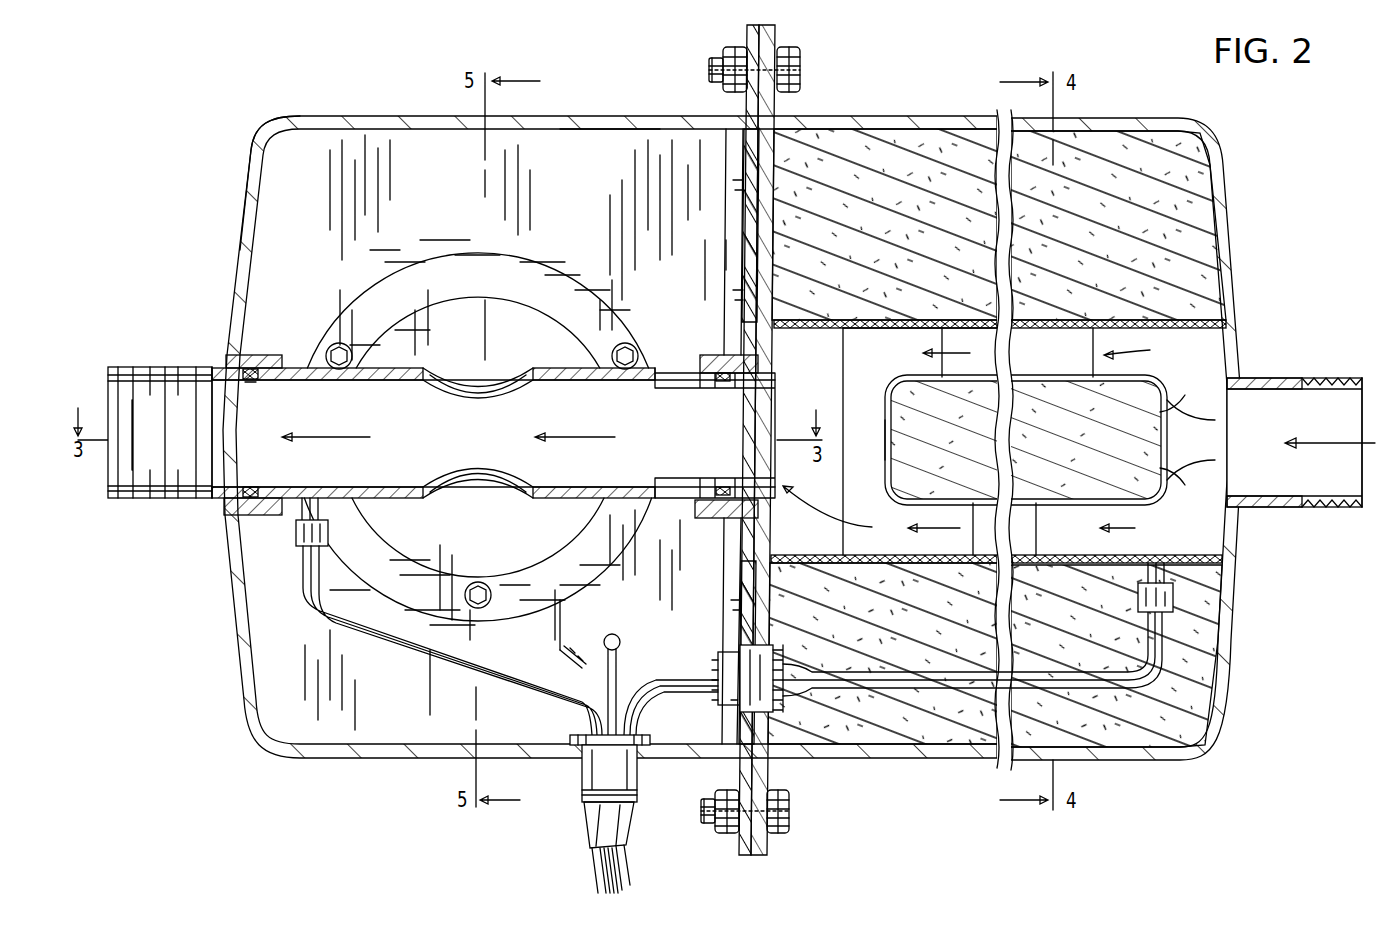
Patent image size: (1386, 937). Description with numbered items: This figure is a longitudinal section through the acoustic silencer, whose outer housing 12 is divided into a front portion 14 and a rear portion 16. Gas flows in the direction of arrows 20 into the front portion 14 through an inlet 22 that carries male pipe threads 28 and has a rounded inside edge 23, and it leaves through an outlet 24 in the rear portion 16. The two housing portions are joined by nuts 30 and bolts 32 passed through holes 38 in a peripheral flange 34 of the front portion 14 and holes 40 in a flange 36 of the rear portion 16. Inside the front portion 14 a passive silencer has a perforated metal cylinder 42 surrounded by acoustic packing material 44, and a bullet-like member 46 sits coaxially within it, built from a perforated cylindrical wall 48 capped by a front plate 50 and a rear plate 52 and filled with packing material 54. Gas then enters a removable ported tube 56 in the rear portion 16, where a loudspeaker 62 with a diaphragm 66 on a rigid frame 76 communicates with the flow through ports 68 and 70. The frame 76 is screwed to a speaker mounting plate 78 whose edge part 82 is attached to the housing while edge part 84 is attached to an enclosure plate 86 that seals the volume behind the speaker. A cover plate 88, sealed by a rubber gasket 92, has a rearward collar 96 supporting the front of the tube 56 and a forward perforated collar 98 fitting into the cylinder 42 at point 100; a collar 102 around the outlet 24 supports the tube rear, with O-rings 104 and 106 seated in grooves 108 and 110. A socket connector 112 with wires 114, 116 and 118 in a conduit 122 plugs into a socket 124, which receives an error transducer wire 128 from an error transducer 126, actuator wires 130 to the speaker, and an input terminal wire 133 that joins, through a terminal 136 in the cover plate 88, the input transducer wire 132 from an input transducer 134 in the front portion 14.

The outer housing 12 is at (562, 115).
The front portion 14 is at (1110, 120).
The rear portion 16 is at (333, 114).
The arrows 20 is at (1312, 441).
The inlet 22 is at (1256, 378).
The inside edge 23 is at (1225, 388).
The outlet 24 is at (133, 367).
The male pipe threads 28 is at (1327, 380).
The nuts 30 is at (722, 53).
The bolts 32 is at (800, 72).
The peripheral flange 34 is at (778, 42).
The flange 36 is at (745, 42).
The holes 38 is at (790, 102).
The holes 40 is at (745, 84).
The perforated metal cylinder 42 is at (885, 321).
The acoustic packing material 44 is at (1118, 439).
The bullet-like member 46 is at (1167, 470).
The cylindrical wall 48 is at (1055, 505).
The front plate 50 is at (1160, 412).
The rear plate 52 is at (884, 446).
The acoustic packing material 54 is at (1026, 440).
The ported tube 56 is at (572, 490).
The loudspeaker 62 is at (448, 252).
The diaphragm 66 is at (479, 525).
The port 68 is at (479, 478).
The port 70 is at (455, 394).
The rigid frame 76 is at (600, 549).
The speaker mounting plate 78 is at (572, 220).
The peripheral edge part 82 is at (610, 128).
The peripheral edge part 84 is at (726, 288).
The enclosure plate 86 is at (726, 258).
The cover plate 88 is at (780, 284).
The rubber gasket 92 is at (762, 187).
The cylindrical collar 96 is at (720, 368).
The collar 98 is at (867, 368).
The point 100 is at (848, 326).
The collar 102 is at (262, 368).
The O-ring 104 is at (256, 353).
The O-ring 106 is at (700, 360).
The groove 108 is at (256, 382).
The groove 110 is at (720, 426).
The socket connector 112 is at (583, 800).
The input signal wire 114 is at (628, 852).
The correction signal wires 116 is at (604, 886).
The error signal wire 118 is at (590, 853).
The conduit 122 is at (624, 821).
The socket 124 is at (598, 776).
The error transducer 126 is at (301, 560).
The error transducer wire 128 is at (418, 649).
The actuator wires 130 is at (576, 656).
The input transducer wire 132 is at (931, 690).
The input terminal wire 133 is at (666, 686).
The input transducer 134 is at (1138, 602).
The terminal 136 is at (778, 708).